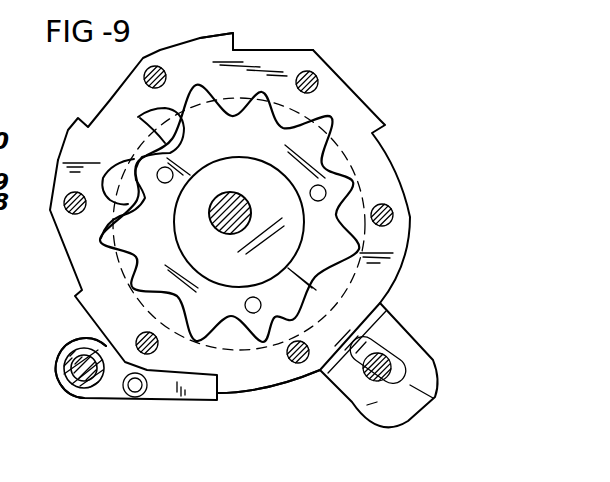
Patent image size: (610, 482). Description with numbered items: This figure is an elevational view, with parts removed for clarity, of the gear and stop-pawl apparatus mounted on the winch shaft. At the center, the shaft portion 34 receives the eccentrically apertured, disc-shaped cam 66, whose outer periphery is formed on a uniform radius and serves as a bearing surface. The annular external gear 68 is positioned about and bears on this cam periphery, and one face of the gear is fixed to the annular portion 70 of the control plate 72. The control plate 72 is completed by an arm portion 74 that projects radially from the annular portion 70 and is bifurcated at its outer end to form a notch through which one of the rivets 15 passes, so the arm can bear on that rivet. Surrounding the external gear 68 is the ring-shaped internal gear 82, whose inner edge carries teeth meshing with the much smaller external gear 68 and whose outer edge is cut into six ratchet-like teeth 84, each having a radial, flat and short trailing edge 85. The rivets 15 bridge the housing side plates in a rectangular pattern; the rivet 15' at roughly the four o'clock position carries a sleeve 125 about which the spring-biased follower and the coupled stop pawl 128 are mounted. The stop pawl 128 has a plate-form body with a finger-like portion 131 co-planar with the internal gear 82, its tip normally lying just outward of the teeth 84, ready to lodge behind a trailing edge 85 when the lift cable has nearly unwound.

The internal gear 82 is at (293, 55).
The teeth 84 is at (221, 37).
The trailing edge 85 is at (237, 43).
The control plate 72 is at (149, 126).
The annular portion 70 is at (229, 213).
The external gear 68 is at (252, 150).
The cam 66 is at (280, 199).
The shaft portion 34 is at (232, 228).
The arm portion 74 is at (407, 338).
The rivets 15 is at (348, 389).
The sleeve 125 is at (90, 357).
The rivet 15' is at (57, 359).
The stop pawl 128 is at (74, 392).
The finger-like portion 131 is at (195, 395).